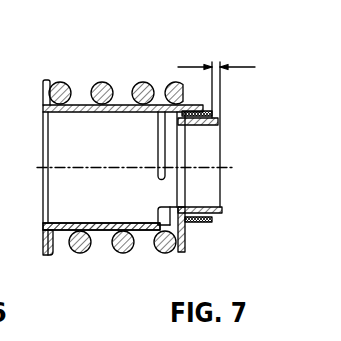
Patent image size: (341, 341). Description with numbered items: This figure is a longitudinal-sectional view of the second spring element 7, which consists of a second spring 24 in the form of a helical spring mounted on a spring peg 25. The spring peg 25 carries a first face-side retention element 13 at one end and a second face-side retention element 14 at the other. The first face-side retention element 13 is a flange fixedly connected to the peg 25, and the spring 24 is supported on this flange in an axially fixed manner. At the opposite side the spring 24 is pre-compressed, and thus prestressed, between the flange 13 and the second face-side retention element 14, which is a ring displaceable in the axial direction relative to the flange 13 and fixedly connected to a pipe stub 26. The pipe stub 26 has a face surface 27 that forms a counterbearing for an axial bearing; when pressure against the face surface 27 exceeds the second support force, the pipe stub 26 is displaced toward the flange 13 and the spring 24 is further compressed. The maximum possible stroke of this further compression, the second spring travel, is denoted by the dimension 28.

The first face-side retention element 13 is at (43, 100).
The second spring 24 is at (145, 82).
The second spring element 7 is at (81, 253).
The spring peg 25 is at (107, 223).
The face surface 27 is at (220, 122).
The pipe stub 26 is at (205, 207).
The second face-side retention element 14 is at (185, 236).
The second spring travel 28 is at (216, 64).